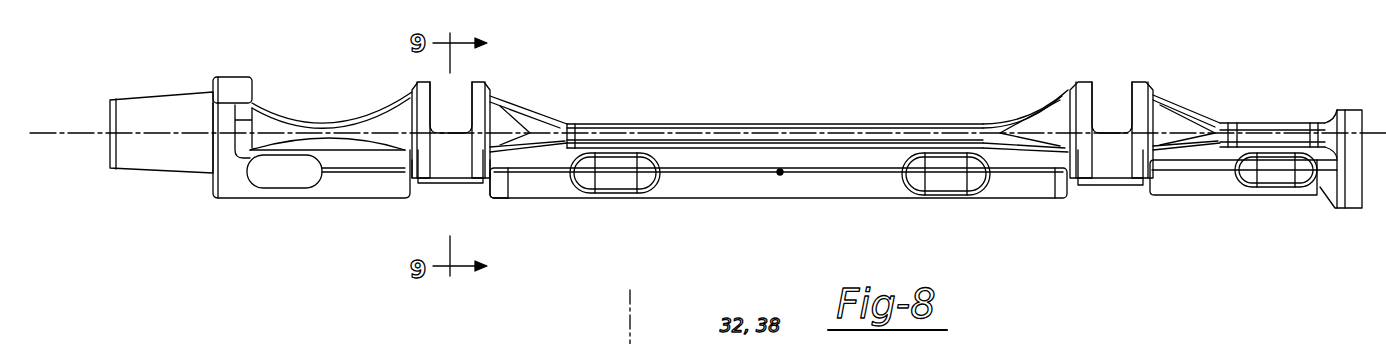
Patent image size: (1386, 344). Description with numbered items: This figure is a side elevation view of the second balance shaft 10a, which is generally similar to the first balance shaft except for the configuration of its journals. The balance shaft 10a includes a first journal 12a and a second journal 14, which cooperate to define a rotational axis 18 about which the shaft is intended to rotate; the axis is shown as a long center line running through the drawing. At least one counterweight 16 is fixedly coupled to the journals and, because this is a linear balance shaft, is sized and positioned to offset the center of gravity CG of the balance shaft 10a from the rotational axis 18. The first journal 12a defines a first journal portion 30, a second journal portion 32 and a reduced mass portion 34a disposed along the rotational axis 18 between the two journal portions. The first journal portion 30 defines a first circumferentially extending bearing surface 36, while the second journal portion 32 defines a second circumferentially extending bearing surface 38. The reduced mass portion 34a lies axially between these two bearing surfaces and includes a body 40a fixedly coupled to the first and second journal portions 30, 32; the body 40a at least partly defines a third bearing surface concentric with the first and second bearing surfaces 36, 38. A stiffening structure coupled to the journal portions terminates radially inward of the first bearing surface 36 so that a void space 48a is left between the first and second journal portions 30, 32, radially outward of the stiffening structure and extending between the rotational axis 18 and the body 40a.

The second balance shaft 10a is at (780, 149).
The first journal 12a is at (475, 131).
The second journal 14 is at (1128, 67).
The counterweight 16 is at (1025, 180).
The rotational axis 18 is at (82, 140).
The first journal portion 30 is at (420, 82).
The second journal portion 32 is at (478, 82).
The reduced mass portion 34a is at (458, 190).
The first circumferentially extending bearing surface 36 is at (413, 115).
The second circumferentially extending bearing surface 38 is at (500, 106).
The body 40a is at (437, 172).
The void space 48a is at (497, 195).
The center of gravity CG is at (778, 175).